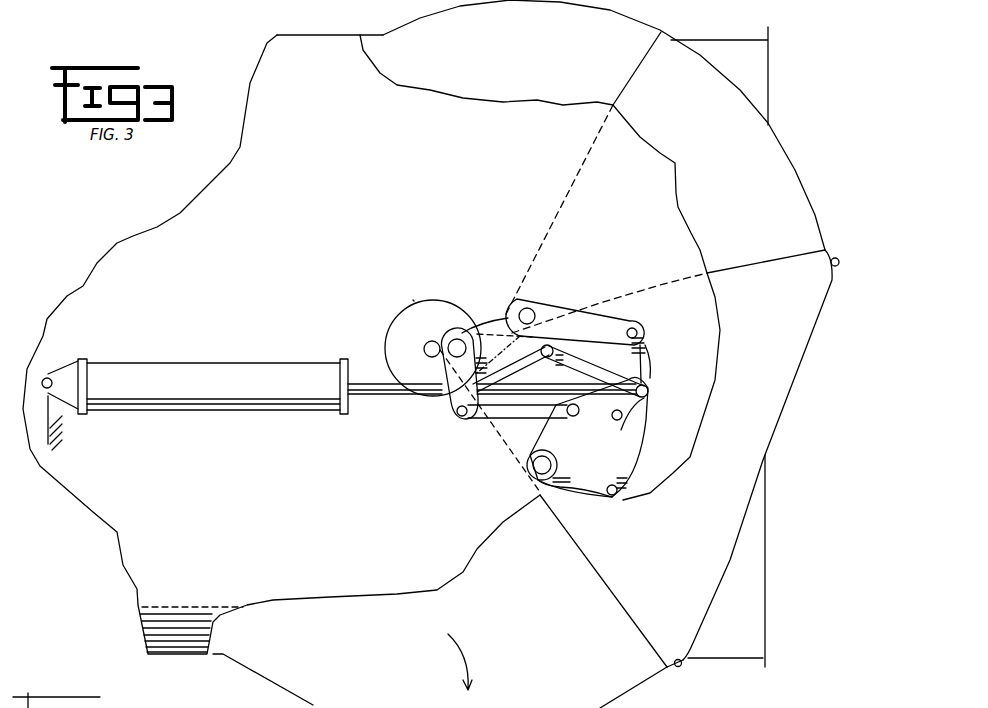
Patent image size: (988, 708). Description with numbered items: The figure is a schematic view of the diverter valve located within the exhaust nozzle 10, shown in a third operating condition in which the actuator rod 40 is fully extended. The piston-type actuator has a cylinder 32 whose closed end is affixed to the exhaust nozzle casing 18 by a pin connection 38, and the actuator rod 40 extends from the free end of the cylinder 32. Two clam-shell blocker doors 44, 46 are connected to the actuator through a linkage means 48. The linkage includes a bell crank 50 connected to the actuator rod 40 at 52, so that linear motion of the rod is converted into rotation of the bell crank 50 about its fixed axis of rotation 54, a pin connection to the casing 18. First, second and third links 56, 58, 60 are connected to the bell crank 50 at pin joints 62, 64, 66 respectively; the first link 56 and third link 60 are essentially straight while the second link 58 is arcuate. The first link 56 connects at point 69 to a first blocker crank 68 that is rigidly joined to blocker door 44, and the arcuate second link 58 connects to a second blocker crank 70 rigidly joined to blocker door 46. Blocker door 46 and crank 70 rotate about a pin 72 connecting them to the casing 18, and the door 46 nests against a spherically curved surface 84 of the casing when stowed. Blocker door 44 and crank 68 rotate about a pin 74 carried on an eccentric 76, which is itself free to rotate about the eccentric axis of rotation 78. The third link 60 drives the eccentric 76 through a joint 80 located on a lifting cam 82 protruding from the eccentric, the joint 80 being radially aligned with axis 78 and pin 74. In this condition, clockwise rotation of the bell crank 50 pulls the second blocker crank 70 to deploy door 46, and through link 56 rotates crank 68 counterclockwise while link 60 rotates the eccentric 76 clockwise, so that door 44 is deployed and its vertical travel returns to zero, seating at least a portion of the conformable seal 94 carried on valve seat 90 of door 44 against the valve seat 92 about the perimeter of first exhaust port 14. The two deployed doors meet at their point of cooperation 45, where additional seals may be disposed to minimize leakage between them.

The exhaust nozzle 10 is at (329, 14).
The first exhaust port 14 is at (402, 671).
The exhaust nozzle casing 18 is at (181, 653).
The cylinder 32 is at (228, 395).
The pin connection 38 is at (47, 378).
The actuator rod 40 is at (365, 399).
The blocker door 44 is at (768, 416).
The hinge point 45 is at (823, 249).
The blocker door 46 is at (623, 86).
The linkage means 48 is at (411, 292).
The bell crank 50 is at (588, 491).
The connection of bell crank to actuator rod 52 is at (648, 392).
The axis of rotation 54 is at (535, 470).
The first link 56 is at (522, 413).
The second link 58 is at (652, 434).
The third link 60 is at (577, 375).
The pin joint 62 is at (571, 417).
The pin joint 64 is at (617, 496).
The pin joint 66 is at (615, 421).
The first blocker crank 68 is at (447, 404).
The connection point 69 is at (459, 417).
The second blocker crank 70 is at (607, 324).
The pin 72 is at (534, 313).
The pin 74 is at (459, 339).
The eccentric 76 is at (386, 333).
The eccentric axis of rotation 78 is at (432, 341).
The joint 80 is at (541, 351).
The lifting cam 82 is at (493, 333).
The spherically curved surface 84 is at (647, 31).
The valve seat 90 is at (665, 666).
The valve seat 92 is at (692, 652).
The conformable seal 94 is at (840, 262).